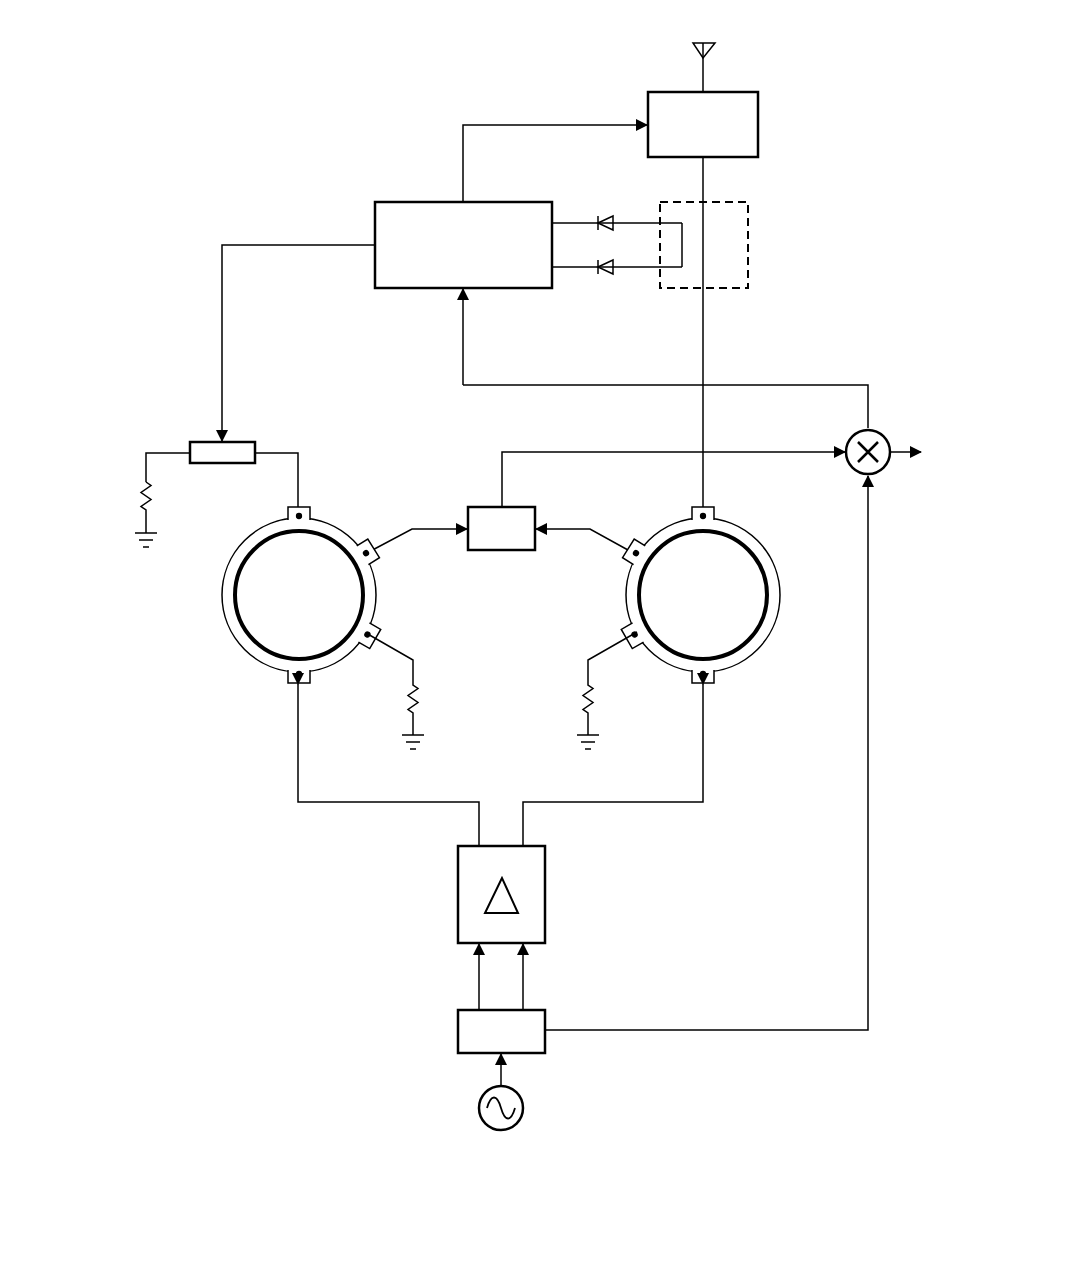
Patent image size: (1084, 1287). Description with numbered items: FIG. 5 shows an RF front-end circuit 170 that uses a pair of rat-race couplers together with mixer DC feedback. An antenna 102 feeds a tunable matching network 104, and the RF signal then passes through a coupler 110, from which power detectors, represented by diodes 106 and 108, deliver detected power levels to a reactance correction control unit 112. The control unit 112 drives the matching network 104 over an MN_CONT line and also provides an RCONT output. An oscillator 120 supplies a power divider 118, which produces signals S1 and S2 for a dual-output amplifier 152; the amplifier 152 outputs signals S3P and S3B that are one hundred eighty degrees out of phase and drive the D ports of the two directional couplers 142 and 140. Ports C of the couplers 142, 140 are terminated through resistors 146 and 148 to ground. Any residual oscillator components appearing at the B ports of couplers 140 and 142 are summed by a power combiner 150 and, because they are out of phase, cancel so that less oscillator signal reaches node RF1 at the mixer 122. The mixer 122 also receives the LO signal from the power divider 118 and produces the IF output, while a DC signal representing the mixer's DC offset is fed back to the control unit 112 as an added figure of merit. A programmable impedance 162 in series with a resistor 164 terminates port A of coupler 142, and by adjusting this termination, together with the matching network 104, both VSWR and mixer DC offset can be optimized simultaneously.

The system 170 is at (320, 75).
The antenna 102 is at (716, 50).
The tunable matching network 104 is at (758, 118).
The diode 106 is at (602, 278).
The diode 108 is at (602, 215).
The coupler 110 is at (749, 245).
The reactance correction control unit 112 is at (418, 201).
The power divider 118 is at (458, 1032).
The oscillator 120 is at (498, 1130).
The mixer 122 is at (880, 436).
The directional coupler 140 is at (781, 596).
The directional coupler 142 is at (222, 596).
The termination resistor 146 is at (421, 699).
The termination resistor 148 is at (596, 699).
The power combiner 150 is at (495, 551).
The dual-output amplifier 152 is at (458, 895).
The programmable impedance 162 is at (218, 464).
The resistor 164 is at (135, 492).